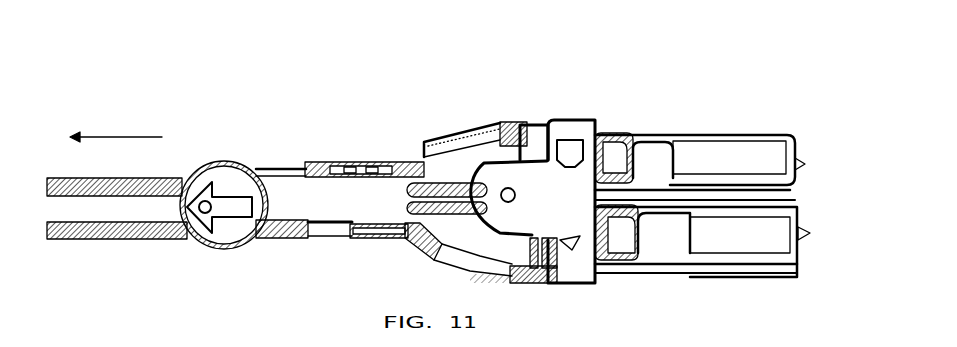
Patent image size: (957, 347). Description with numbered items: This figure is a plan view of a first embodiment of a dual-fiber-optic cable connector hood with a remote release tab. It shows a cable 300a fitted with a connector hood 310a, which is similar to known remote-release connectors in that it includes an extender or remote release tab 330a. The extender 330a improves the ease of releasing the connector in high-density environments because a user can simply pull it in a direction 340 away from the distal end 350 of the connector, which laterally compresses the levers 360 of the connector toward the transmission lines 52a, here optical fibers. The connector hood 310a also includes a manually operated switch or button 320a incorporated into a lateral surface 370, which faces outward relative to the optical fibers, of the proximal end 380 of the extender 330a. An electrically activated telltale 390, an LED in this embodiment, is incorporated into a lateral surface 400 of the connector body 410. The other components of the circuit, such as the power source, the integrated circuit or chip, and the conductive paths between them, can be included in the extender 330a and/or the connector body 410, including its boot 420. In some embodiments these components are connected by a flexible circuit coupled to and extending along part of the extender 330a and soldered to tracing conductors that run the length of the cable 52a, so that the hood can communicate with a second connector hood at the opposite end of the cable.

The cable 300a is at (262, 66).
The transmission line 52a is at (117, 208).
The direction 340 is at (116, 129).
The lateral surface 370 is at (233, 232).
The proximal end 380 is at (178, 208).
The manually operated switch or button 320a is at (203, 216).
The extender or remote release tab 330a is at (292, 190).
The boot 420 is at (426, 142).
The electrically activated telltale 390 is at (504, 188).
The lateral surface 400 is at (507, 215).
The connector hood 310a is at (511, 115).
The connector body 410 is at (577, 128).
The lever 360 is at (653, 150).
The distal end 350 is at (790, 140).